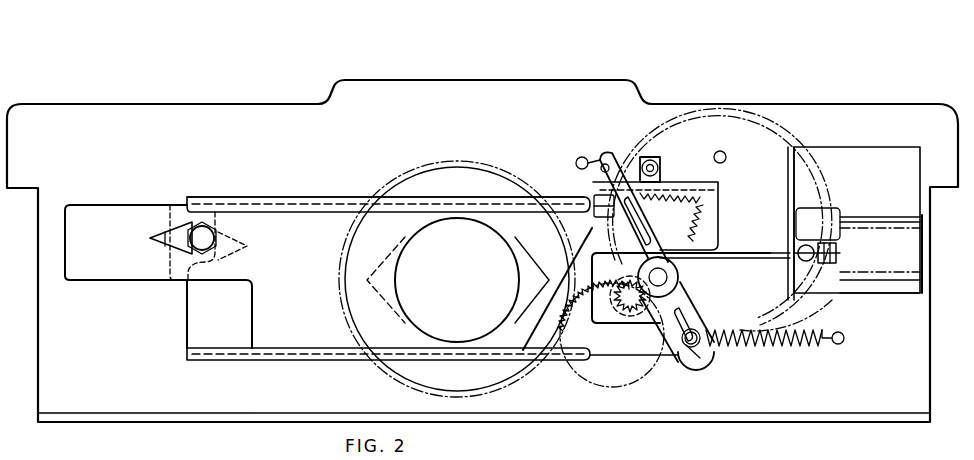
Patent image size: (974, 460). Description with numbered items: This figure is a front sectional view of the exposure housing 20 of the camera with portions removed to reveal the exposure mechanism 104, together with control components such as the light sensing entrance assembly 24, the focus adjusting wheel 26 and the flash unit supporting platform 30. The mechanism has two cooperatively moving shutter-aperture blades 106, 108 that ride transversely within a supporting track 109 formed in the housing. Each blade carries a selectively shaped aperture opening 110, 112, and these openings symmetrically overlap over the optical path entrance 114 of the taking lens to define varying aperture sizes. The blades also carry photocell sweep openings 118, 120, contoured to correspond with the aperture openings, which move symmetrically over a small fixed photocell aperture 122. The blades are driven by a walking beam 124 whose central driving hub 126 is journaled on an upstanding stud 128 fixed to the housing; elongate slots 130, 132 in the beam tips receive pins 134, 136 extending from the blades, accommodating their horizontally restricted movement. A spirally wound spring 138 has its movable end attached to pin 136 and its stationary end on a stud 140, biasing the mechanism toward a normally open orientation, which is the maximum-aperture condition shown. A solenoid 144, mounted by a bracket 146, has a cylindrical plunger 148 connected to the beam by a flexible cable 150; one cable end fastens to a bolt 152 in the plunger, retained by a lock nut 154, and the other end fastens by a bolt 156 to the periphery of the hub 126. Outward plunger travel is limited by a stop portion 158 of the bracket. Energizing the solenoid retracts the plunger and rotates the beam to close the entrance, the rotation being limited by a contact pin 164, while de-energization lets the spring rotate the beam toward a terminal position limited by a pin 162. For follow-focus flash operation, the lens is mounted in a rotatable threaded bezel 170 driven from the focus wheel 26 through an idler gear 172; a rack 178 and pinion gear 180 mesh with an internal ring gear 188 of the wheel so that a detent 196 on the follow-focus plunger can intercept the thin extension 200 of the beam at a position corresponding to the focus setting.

The exposure housing 20 is at (890, 90).
The flash unit supporting platform 30 is at (596, 88).
The focus adjusting wheel 26 is at (700, 127).
The light sensing entrance assembly 24 is at (204, 250).
The exposure mechanism 104 is at (306, 175).
The shutter-aperture blade 106 is at (114, 280).
The shutter-aperture blade 108 is at (612, 343).
The supporting track 109 is at (344, 197).
The aperture opening 110 is at (520, 277).
The aperture opening 112 is at (386, 275).
The optical path entrance 114 is at (453, 270).
The photocell sweep opening 118 is at (150, 238).
The photocell sweep opening 120 is at (249, 246).
The photocell aperture 122 is at (212, 236).
The walking beam 124 is at (682, 302).
The driving hub 126 is at (678, 270).
The stud 128 is at (667, 278).
The elongate slot 130 is at (622, 186).
The elongate slot 132 is at (694, 350).
The pin 134 is at (594, 200).
The pin 136 is at (690, 347).
The spirally wound spring 138 is at (786, 346).
The stud 140 is at (844, 338).
The solenoid 144 is at (924, 246).
The bracket 146 is at (888, 156).
The plunger 148 is at (825, 278).
The flexible cable 150 is at (770, 252).
The bolt 152 is at (800, 247).
The lock nut 154 is at (836, 253).
The bolt 156 is at (681, 288).
The stop portion 158 is at (795, 223).
The pin 162 is at (576, 163).
The contact pin 164 is at (726, 158).
The bezel 170 is at (468, 166).
The idler gear 172 is at (572, 360).
The rack 178 is at (720, 196).
The pinion gear 180 is at (672, 222).
The internal ring gear 188 is at (692, 169).
The detent 196 is at (648, 158).
The thin extension 200 is at (606, 164).